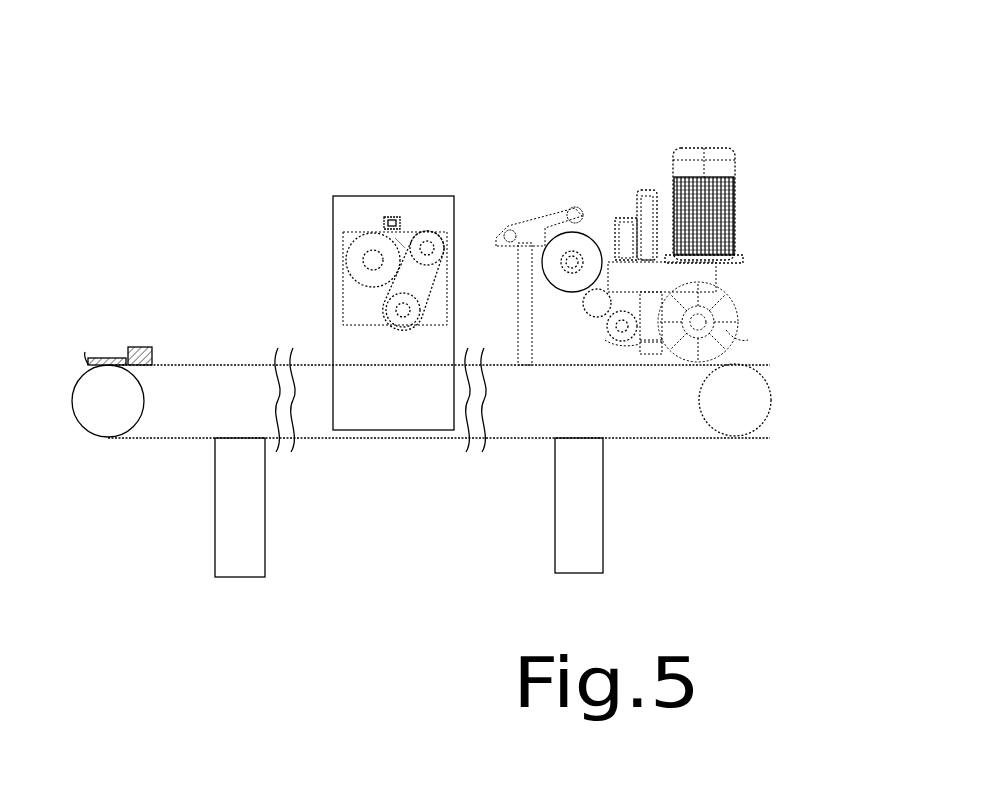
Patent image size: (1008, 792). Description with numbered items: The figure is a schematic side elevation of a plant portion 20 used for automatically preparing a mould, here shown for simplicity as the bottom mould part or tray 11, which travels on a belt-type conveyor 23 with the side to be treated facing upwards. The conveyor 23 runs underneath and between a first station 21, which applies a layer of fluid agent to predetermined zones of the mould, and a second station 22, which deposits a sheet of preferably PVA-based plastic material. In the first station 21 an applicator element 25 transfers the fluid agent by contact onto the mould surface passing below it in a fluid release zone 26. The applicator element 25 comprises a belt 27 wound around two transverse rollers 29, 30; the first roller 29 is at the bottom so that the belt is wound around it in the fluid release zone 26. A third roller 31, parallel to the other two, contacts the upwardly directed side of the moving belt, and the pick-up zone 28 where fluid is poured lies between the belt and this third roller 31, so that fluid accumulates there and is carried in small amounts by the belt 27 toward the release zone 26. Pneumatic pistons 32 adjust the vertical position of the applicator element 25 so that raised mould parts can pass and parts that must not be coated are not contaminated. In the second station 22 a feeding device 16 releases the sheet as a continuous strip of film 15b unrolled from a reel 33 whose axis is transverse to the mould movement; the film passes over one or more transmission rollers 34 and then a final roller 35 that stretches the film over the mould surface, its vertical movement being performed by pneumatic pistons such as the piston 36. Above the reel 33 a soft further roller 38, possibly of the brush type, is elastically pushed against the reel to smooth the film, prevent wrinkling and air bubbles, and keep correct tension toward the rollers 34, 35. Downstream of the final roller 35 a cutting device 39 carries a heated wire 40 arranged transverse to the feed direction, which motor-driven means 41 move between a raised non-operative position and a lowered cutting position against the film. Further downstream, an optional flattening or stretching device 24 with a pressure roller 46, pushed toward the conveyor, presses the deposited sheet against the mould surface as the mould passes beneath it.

The plant portion 20 is at (163, 90).
The tray 11 is at (115, 342).
The conveyor 23 is at (206, 357).
The first station 21 is at (306, 204).
The third roller 31 is at (354, 265).
The roller 30 is at (437, 247).
The first roller 29 is at (401, 313).
The belt 27 is at (427, 300).
The applicator element 25 is at (426, 213).
The pneumatic pistons 32 is at (401, 246).
The pick-up zone 28 is at (386, 222).
The fluid release zone 26 is at (385, 336).
The second station 22 is at (538, 152).
The reel 33 is at (566, 275).
The further roller 38 is at (578, 214).
The transmission rollers 34 is at (597, 310).
The final roller 35 is at (623, 331).
The pneumatic piston 36 is at (626, 226).
The feeding device 16 is at (575, 196).
The motor-driven means 41 is at (652, 193).
The flattening or stretching device 24 is at (740, 276).
The cutting device 39 is at (660, 339).
The pressure roller 46 is at (733, 340).
The wire 40 is at (648, 348).
The continuous strip of film 15b is at (606, 336).